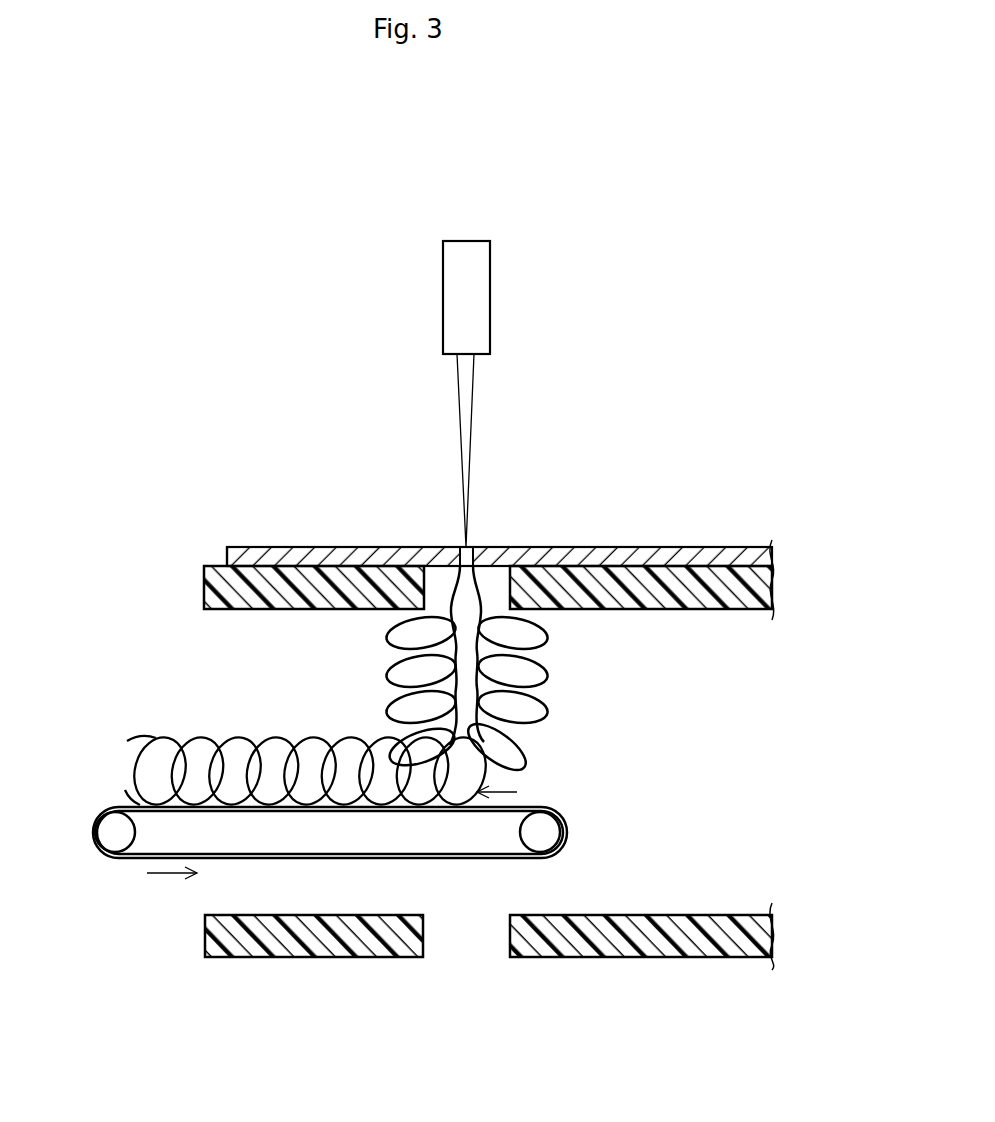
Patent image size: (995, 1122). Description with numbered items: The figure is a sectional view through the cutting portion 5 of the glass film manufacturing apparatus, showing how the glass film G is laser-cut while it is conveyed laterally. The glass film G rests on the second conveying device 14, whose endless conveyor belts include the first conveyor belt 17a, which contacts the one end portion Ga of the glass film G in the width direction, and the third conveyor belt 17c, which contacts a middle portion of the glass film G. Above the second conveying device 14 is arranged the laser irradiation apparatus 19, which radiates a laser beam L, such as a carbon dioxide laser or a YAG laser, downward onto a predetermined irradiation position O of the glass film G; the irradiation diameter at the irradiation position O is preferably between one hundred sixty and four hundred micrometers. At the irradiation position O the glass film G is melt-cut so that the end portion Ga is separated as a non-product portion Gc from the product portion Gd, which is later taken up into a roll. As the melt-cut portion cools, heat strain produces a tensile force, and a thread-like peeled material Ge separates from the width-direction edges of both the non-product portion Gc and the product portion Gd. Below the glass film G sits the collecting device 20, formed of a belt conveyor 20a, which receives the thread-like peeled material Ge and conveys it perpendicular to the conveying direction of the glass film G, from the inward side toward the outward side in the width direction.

The cutting portion 5 is at (658, 197).
The second conveying device 14 is at (262, 975).
The first conveyor belt 17a is at (204, 592).
The third conveyor belt 17c is at (670, 610).
The laser irradiation apparatus 19 is at (490, 285).
The laser beam L is at (470, 412).
The irradiation position O is at (465, 545).
The glass film G is at (466, 512).
The one end portion Ga is at (226, 556).
The non-product portion Gc is at (322, 547).
The product portion Gd is at (590, 547).
The thread-like peeled material Ge is at (388, 672).
The collecting device 20 is at (333, 858).
The belt conveyor 20a is at (527, 807).